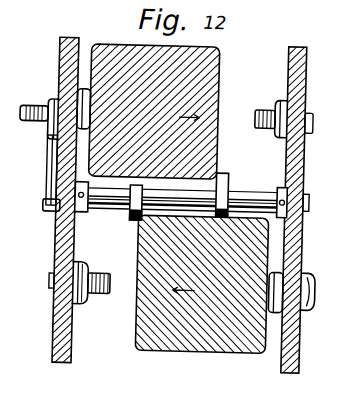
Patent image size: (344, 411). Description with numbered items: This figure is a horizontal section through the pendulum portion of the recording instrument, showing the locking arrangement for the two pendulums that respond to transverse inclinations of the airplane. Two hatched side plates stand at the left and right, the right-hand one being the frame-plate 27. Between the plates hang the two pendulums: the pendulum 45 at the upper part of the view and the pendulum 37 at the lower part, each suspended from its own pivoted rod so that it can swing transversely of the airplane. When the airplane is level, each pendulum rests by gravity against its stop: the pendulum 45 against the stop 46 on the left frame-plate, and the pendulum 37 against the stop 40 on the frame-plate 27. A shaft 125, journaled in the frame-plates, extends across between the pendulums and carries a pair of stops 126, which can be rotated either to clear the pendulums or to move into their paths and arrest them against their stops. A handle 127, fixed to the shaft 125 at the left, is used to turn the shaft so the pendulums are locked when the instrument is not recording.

The frame-plate 27 is at (303, 359).
The pendulum 37 is at (253, 353).
The stop 40 is at (301, 258).
The pendulum 45 is at (209, 81).
The stop 46 is at (74, 82).
The shaft 125 is at (258, 191).
The stops 126 is at (130, 203).
The handle 127 is at (54, 166).